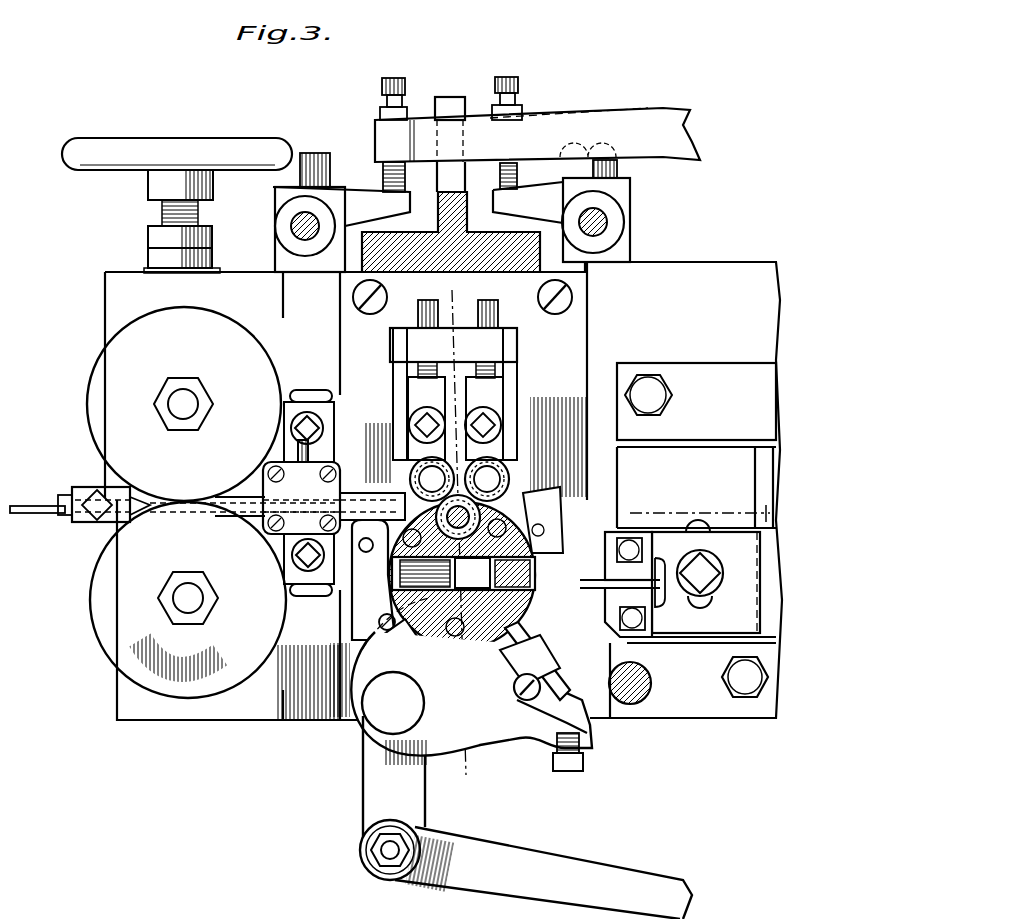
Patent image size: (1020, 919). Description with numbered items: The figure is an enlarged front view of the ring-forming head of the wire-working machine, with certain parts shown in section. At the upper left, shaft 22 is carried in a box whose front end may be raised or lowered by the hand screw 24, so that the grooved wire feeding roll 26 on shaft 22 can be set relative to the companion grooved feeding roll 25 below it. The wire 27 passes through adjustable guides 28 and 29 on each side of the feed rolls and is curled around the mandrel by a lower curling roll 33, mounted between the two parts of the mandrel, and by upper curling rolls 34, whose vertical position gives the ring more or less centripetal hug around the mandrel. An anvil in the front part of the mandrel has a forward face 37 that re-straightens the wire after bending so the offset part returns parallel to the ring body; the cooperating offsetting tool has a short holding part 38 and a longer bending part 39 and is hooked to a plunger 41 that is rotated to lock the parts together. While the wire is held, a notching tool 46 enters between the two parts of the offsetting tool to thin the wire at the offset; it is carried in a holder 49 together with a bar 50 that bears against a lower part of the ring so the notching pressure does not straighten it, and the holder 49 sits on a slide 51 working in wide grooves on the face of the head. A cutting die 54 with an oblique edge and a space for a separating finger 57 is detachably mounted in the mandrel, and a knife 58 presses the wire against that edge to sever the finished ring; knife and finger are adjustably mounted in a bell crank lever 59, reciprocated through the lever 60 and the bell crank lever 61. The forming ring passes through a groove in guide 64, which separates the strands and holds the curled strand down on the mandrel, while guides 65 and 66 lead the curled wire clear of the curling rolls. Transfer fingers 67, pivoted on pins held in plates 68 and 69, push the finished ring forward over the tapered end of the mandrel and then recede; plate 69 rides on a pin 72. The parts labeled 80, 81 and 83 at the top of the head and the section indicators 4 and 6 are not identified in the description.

The section line 4- 4 is at (450, 300).
The section line 6 is at (705, 507).
The shaft 22 is at (184, 395).
The hand screw 24 is at (128, 145).
The wire feeding roll 25 is at (188, 600).
The wire feeding roll 26 is at (184, 404).
The wire 27 is at (32, 512).
The adjustable guide 28 is at (66, 495).
The adjustable guide 29 is at (345, 490).
The lower curling roll 33 is at (463, 562).
The upper curling rolls 34 is at (412, 463).
The anvil face 37 is at (472, 565).
The holding part 38 is at (565, 540).
The bending part 39 is at (570, 560).
The plunger 41 is at (560, 520).
The notching tool 46 is at (620, 569).
The holder 49 is at (706, 576).
The bar 50 is at (613, 610).
The slide 51 is at (696, 445).
The cutting die 54 is at (495, 600).
The separating finger 57 is at (503, 660).
The knife 58 is at (522, 700).
The bell crank lever 59 is at (360, 775).
The lever 60 is at (518, 853).
The bell crank lever 61 is at (383, 572).
The guide 64 is at (554, 507).
The guide 65 is at (430, 660).
The guide 66 is at (372, 590).
The fingers 67 is at (520, 490).
The plate 68 is at (408, 480).
The plate 69 is at (355, 610).
The pin 72 is at (345, 532).
The pivot bosses 80 is at (292, 223).
The arms 81 is at (350, 200).
The top plate 83 is at (650, 112).